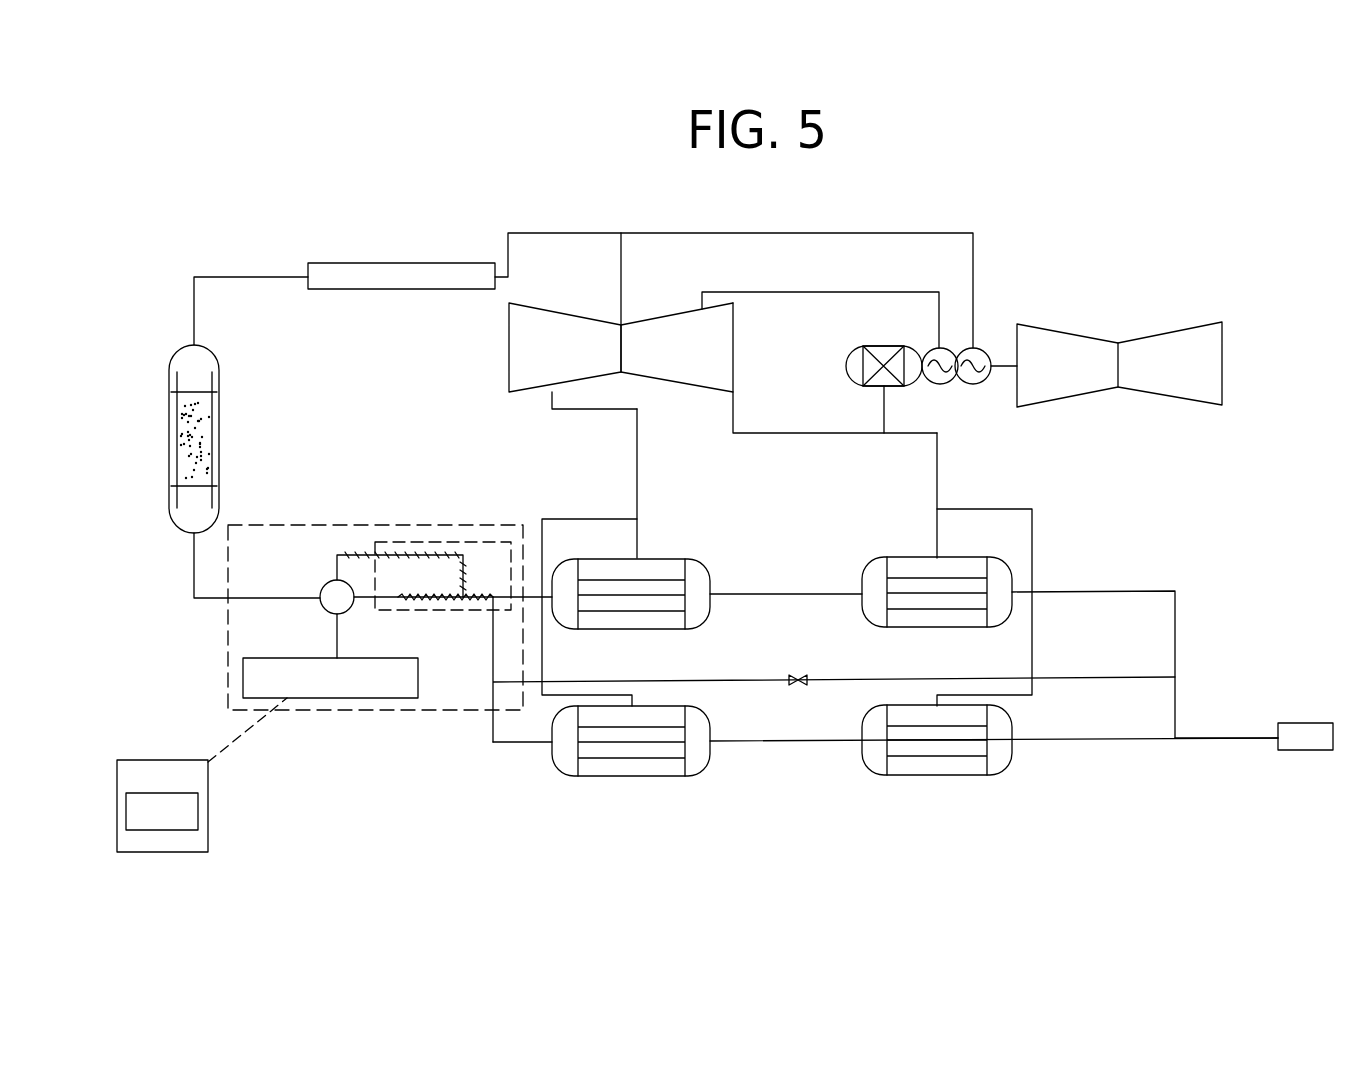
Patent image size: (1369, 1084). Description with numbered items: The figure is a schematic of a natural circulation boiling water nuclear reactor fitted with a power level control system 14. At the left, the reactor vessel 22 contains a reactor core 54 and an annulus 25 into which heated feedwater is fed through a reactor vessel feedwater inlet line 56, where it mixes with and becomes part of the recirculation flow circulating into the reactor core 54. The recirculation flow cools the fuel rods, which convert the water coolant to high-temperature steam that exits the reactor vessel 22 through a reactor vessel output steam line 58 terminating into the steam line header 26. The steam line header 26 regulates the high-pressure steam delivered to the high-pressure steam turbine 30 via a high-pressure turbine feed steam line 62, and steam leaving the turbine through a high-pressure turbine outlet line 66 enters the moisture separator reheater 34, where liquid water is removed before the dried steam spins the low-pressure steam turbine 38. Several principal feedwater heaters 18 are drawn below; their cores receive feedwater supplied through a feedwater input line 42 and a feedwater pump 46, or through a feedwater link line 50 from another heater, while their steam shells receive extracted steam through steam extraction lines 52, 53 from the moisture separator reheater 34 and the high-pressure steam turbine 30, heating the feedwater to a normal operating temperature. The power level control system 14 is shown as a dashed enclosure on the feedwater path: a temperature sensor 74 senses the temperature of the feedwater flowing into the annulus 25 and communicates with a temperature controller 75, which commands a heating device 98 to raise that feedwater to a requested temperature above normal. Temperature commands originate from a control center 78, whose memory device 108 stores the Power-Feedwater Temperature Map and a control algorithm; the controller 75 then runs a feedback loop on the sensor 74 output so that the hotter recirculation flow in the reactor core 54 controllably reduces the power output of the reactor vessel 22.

The power level control system 14 is at (402, 712).
The principal feedwater heater 18 is at (700, 600).
The reactor vessel 22 is at (182, 362).
The annulus 25 is at (172, 392).
The steam line header 26 is at (432, 272).
The high-pressure steam turbine 30 is at (515, 345).
The moisture separator reheater 34 is at (856, 358).
The low-pressure steam turbine 38 is at (1065, 387).
The feedwater input line 42 is at (1238, 737).
The feedwater pump 46 is at (1320, 743).
The feedwater link line 50 is at (805, 593).
The steam extraction line 52 is at (937, 485).
The steam extraction line 53 is at (637, 487).
The reactor core 54 is at (186, 435).
The reactor vessel feedwater inlet line 56 is at (194, 563).
The reactor vessel output steam line 58 is at (194, 305).
The high-pressure turbine feed steam line 62 is at (621, 292).
The high-pressure turbine outlet line 66 is at (802, 432).
The temperature sensor 74 is at (332, 592).
The temperature controller 75 is at (243, 675).
The control center 78 is at (163, 852).
The heating device 98 is at (445, 598).
The memory device 108 is at (198, 808).